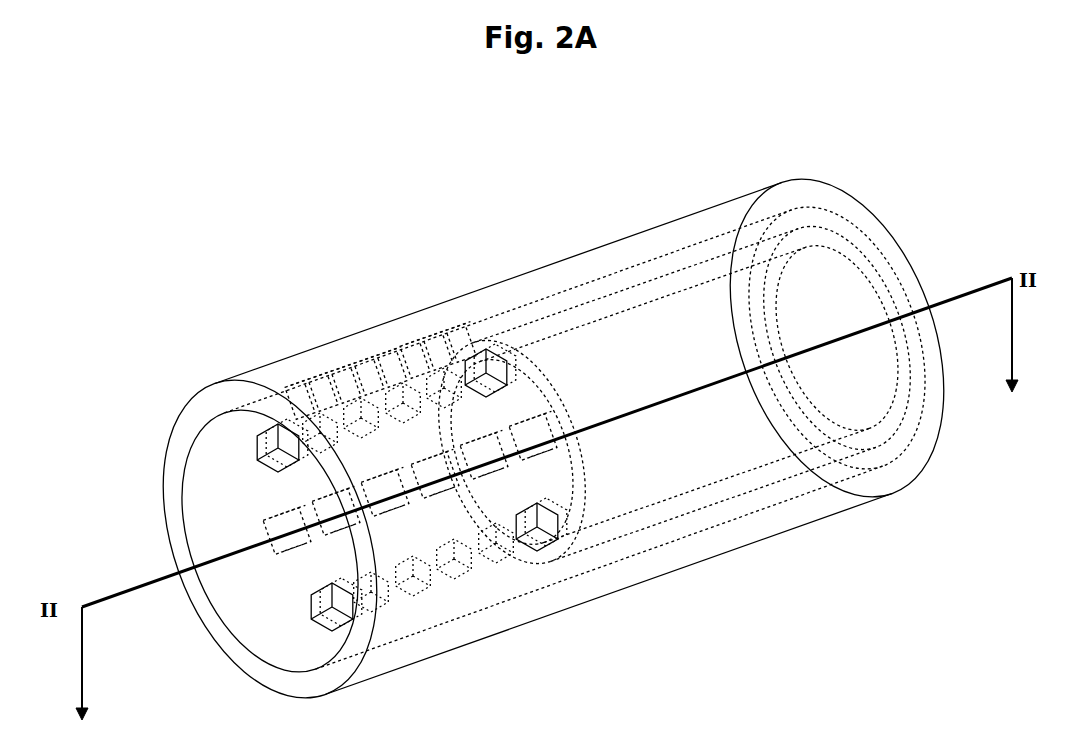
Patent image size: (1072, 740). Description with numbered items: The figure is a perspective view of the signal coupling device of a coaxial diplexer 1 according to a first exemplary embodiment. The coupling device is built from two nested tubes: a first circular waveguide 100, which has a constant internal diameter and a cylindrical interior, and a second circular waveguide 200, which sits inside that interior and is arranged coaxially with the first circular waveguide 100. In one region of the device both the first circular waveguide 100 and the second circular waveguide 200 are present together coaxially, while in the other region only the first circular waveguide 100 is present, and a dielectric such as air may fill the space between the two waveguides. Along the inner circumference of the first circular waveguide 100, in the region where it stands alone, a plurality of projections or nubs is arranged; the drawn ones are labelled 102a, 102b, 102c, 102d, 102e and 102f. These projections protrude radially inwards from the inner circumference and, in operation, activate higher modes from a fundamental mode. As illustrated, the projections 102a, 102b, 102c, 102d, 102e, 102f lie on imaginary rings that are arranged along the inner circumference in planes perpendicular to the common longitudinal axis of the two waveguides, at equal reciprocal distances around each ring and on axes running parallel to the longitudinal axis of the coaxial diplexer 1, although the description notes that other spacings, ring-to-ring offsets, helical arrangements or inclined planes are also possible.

The coaxial diplexer 1 is at (507, 174).
The first circular waveguide 100 is at (553, 438).
The second circular waveguide 200 is at (674, 395).
The projection 102a is at (282, 459).
The projection 102b is at (337, 446).
The projection 102c is at (382, 435).
The fourth hexagonal element 102d is at (415, 418).
The fifth hexagonal element 102e is at (459, 404).
The sixth hexagonal element 102f is at (500, 382).